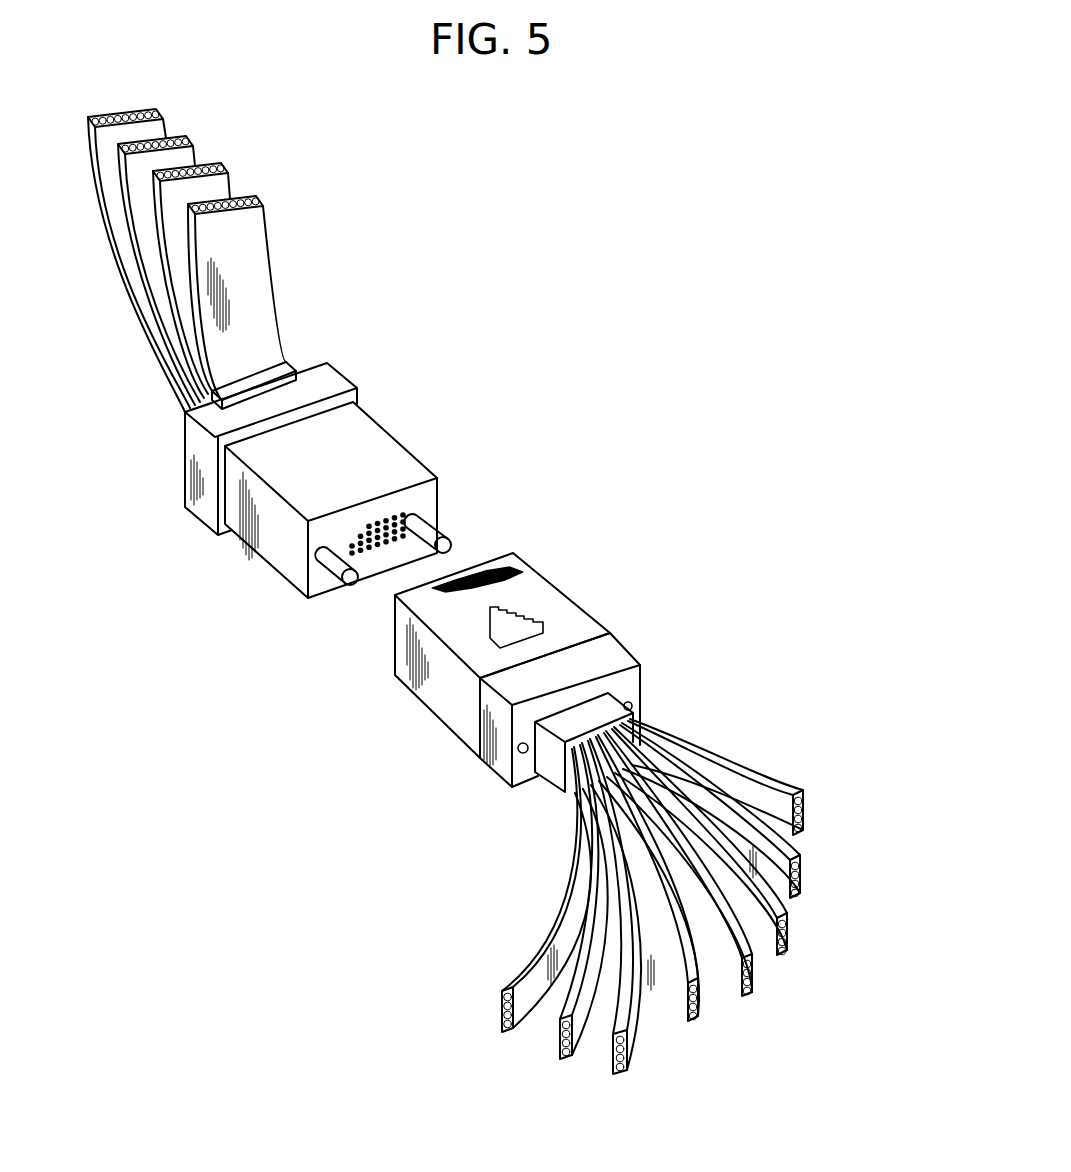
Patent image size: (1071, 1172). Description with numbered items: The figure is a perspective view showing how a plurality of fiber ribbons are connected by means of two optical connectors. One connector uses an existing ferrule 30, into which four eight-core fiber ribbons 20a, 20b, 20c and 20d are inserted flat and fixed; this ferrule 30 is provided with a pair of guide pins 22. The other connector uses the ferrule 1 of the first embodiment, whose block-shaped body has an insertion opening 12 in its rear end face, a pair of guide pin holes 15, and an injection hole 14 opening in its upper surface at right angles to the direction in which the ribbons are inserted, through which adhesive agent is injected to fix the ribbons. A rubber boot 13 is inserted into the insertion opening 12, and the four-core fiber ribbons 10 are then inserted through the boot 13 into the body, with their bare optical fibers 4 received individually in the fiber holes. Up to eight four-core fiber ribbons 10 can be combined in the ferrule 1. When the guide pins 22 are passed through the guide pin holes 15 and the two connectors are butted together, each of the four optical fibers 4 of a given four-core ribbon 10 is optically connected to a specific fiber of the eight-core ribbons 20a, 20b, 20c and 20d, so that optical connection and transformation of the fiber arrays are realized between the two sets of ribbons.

The ferrule 1 is at (560, 568).
The optical fiber 4 is at (804, 827).
The fiber ribbon 10 is at (752, 779).
The insertion opening 12 is at (531, 765).
The rubber boot 13 is at (603, 708).
The injection hole 14 is at (532, 628).
The guide pin holes 15 is at (631, 703).
The eight-core fiber ribbon 20a is at (271, 218).
The eight-core fiber ribbon 20b is at (234, 188).
The eight-core fiber ribbon 20c is at (202, 160).
The eight-core fiber ribbon 20d is at (172, 132).
The guide pins 22 is at (435, 530).
The existing ferrule 30 is at (395, 437).